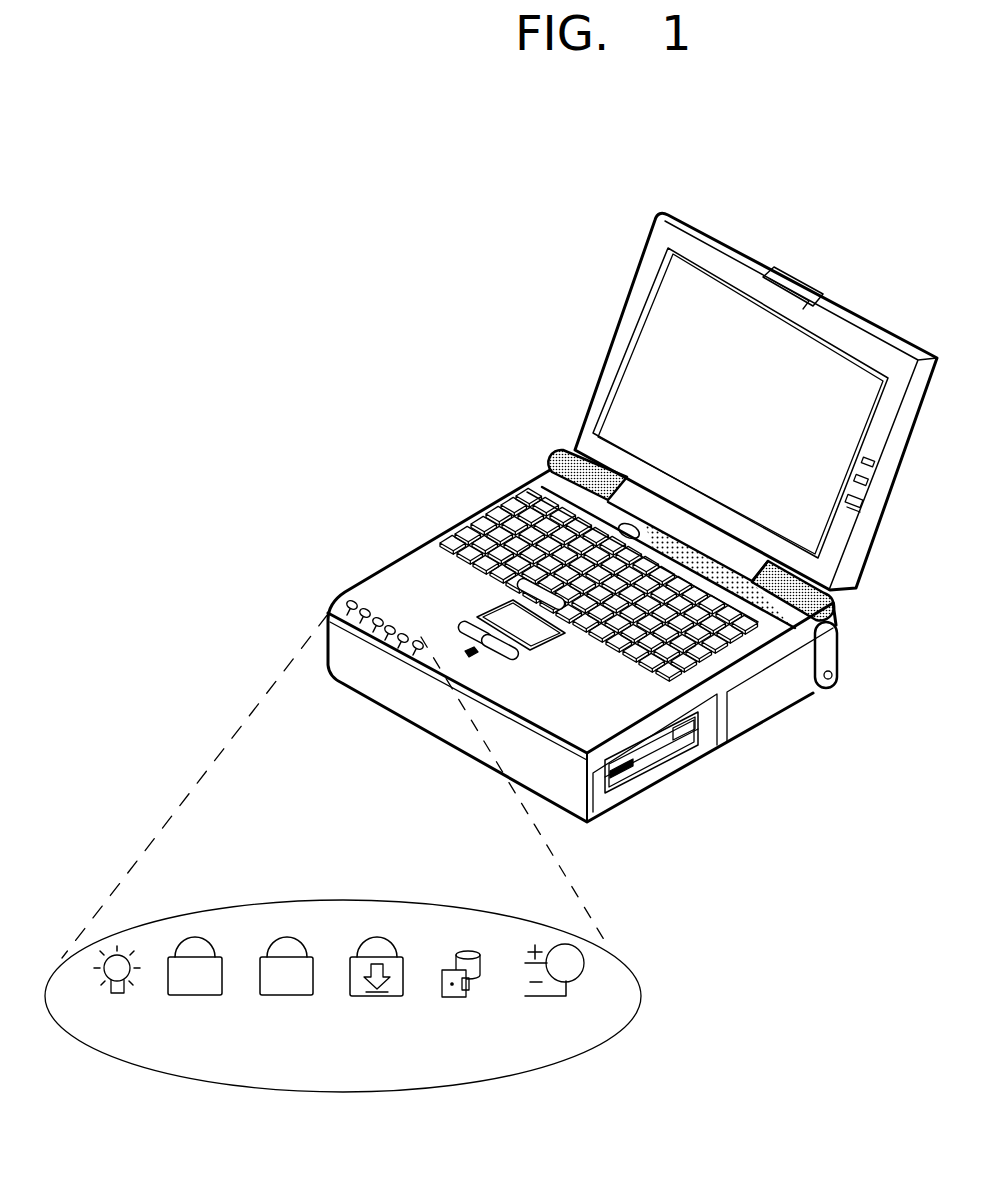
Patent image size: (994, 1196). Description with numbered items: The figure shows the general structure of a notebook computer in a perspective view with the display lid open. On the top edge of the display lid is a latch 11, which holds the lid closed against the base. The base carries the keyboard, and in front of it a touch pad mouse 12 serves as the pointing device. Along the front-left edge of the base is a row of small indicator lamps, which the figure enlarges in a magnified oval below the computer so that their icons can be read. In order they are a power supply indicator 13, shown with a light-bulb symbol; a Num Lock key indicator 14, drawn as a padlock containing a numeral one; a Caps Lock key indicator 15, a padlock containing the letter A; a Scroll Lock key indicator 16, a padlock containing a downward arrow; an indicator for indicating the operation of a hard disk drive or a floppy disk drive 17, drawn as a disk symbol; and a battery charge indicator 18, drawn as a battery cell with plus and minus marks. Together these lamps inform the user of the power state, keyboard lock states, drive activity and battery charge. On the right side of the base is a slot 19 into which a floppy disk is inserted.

The latch 11 is at (795, 290).
The touch pad mouse 12 is at (547, 641).
The power supply indicator 13 is at (118, 995).
The Num Lock key indicator 14 is at (195, 995).
The Caps Lock key indicator 15 is at (287, 995).
The Scroll Lock key indicator 16 is at (375, 997).
The indicator for indicating operation of a hard disk drive or a floppy disk drive 17 is at (462, 997).
The battery charge indicator 18 is at (551, 997).
The slot 19 is at (703, 747).